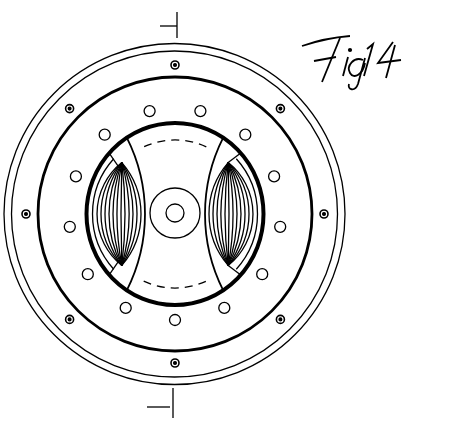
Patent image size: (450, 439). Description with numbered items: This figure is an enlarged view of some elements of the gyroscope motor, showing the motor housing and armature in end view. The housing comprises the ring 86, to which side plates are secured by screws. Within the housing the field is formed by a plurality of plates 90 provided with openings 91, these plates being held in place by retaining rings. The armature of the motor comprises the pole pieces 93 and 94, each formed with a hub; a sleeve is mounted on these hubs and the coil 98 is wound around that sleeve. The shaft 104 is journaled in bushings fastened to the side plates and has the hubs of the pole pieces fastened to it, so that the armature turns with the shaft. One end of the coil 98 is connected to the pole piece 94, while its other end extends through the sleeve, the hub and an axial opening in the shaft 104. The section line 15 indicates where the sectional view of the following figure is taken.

The ring 86 is at (315, 116).
The plates 90 is at (175, 214).
The openings 91 is at (108, 265).
The pole piece 93 is at (175, 195).
The pole piece 94 is at (246, 256).
The coil 98 is at (212, 249).
The shaft 104 is at (175, 206).
The section line 15 15 is at (149, 218).